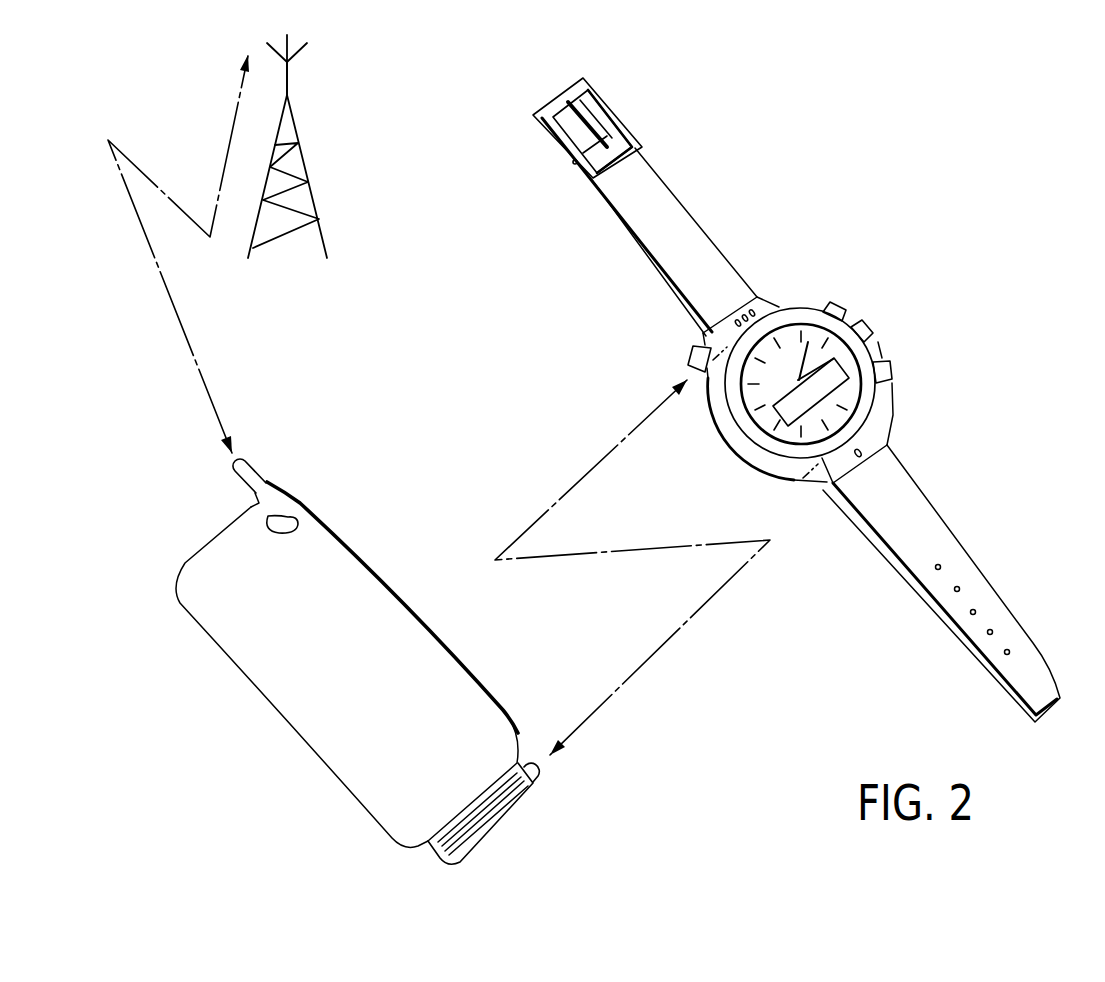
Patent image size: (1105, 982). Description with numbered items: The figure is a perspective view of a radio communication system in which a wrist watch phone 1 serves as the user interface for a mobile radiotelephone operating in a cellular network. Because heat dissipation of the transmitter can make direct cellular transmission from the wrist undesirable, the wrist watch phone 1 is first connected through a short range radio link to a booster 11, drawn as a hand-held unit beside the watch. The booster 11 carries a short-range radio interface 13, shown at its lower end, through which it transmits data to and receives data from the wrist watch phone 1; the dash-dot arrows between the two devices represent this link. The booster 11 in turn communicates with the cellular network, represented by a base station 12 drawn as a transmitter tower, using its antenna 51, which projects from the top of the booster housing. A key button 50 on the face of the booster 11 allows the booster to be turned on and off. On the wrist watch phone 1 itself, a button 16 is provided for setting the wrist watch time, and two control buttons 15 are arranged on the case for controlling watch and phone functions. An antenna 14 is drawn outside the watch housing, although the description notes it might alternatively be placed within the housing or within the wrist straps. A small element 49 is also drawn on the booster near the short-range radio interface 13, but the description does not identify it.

The wrist watch phone 1 is at (847, 190).
The booster 11 is at (357, 802).
The base station 12 is at (297, 141).
The short-range radio interface 13 is at (515, 812).
The antenna 14 is at (689, 350).
The control buttons 15 is at (838, 304).
The button 16 is at (871, 328).
The infrared transceiver of telephone 49 is at (538, 775).
The key button 50 is at (290, 520).
The antenna 51 is at (255, 470).